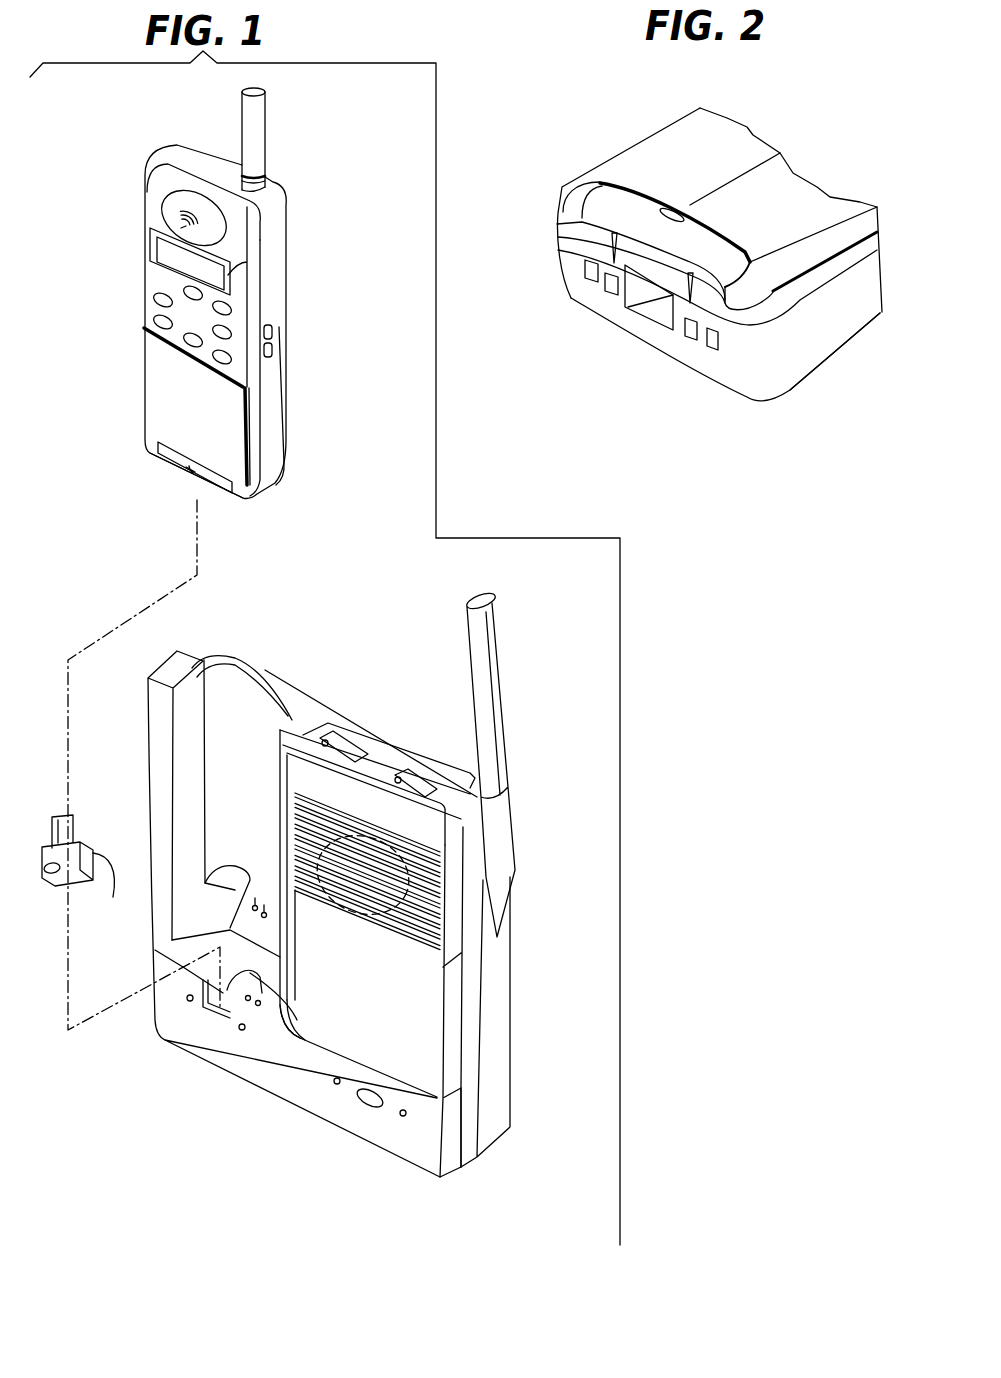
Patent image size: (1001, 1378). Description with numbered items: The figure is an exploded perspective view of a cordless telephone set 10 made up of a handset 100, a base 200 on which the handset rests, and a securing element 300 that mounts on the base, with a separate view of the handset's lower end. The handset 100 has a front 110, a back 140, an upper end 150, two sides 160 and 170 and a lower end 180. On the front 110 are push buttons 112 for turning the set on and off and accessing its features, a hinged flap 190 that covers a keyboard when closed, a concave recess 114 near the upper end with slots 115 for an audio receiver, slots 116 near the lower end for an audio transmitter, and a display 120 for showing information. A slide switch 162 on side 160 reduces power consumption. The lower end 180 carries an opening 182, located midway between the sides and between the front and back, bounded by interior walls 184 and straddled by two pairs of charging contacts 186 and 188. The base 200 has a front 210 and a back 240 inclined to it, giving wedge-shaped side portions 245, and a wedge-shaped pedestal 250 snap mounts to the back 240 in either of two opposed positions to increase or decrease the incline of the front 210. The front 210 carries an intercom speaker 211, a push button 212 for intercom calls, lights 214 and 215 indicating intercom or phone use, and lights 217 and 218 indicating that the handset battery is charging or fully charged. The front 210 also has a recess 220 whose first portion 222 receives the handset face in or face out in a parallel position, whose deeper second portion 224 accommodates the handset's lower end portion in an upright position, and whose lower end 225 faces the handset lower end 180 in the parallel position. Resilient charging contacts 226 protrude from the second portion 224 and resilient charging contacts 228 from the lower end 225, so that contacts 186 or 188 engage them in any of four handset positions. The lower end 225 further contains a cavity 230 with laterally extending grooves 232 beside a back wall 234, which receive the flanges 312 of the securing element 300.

In FIG. 1, the cordless telephone set 10 is at (103, 553).
In FIG. 1, the handset 100 is at (284, 215).
In FIG. 2, the handset 100 is at (601, 166).
In FIG. 1, the front 110 is at (160, 358).
In FIG. 2, the front 110 is at (657, 145).
In FIG. 1, the push buttons 112 is at (150, 318).
In FIG. 1, the concave recess 114 is at (153, 186).
In FIG. 1, the slots 115 is at (182, 222).
In FIG. 1, the slots 116 is at (187, 473).
In FIG. 2, the slots 116 is at (672, 210).
In FIG. 1, the display 120 is at (215, 273).
In FIG. 1, the back 140 is at (288, 308).
In FIG. 2, the back 140 is at (717, 395).
In FIG. 1, the upper end 150 is at (200, 150).
In FIG. 1, the side 160 is at (268, 420).
In FIG. 2, the side 160 is at (820, 322).
In FIG. 1, the slide switch 162 is at (273, 340).
In FIG. 2, the side 170 is at (557, 247).
In FIG. 1, the lower end 180 is at (270, 481).
In FIG. 2, the lower end 180 is at (630, 333).
In FIG. 2, the opening 182 is at (665, 312).
In FIG. 2, the interior walls 184 is at (640, 290).
In FIG. 2, the charging contacts 186 is at (610, 285).
In FIG. 2, the charging contacts 188 is at (712, 350).
In FIG. 1, the hinged flap 190 is at (163, 408).
In FIG. 2, the hinged flap 190 is at (785, 170).
In FIG. 1, the base 200 is at (514, 959).
In FIG. 1, the front 210 is at (423, 1032).
In FIG. 1, the intercom speaker 211 is at (390, 913).
In FIG. 1, the push button 212 is at (368, 1102).
In FIG. 1, the light 214 is at (337, 1084).
In FIG. 1, the light 215 is at (403, 1117).
In FIG. 1, the light 217 is at (188, 1001).
In FIG. 1, the light 218 is at (242, 1030).
In FIG. 1, the recess 220 is at (187, 735).
In FIG. 1, the first portion 222 is at (243, 707).
In FIG. 1, the second portion 224 is at (270, 930).
In FIG. 1, the lower end 225 is at (182, 950).
In FIG. 1, the resilient charging contacts 226 is at (264, 912).
In FIG. 1, the resilient charging contacts 228 is at (252, 1002).
In FIG. 1, the cavity 230 is at (210, 1018).
In FIG. 1, the grooves 232 is at (300, 1040).
In FIG. 1, the back wall 234 is at (262, 972).
In FIG. 1, the back 240 is at (483, 1067).
In FIG. 1, the side portions 245 is at (487, 992).
In FIG. 1, the pedestal 250 is at (507, 937).
In FIG. 1, the securing element 300 is at (48, 886).
In FIG. 1, the flanges 312 is at (120, 888).